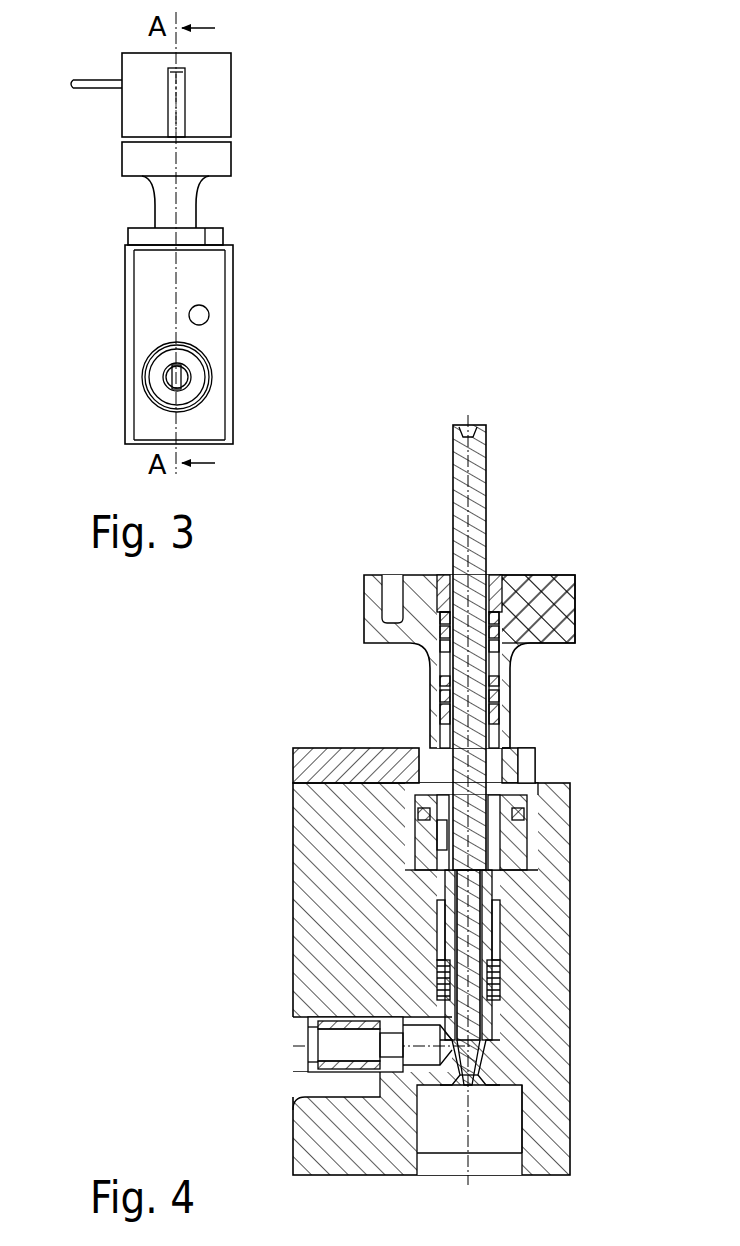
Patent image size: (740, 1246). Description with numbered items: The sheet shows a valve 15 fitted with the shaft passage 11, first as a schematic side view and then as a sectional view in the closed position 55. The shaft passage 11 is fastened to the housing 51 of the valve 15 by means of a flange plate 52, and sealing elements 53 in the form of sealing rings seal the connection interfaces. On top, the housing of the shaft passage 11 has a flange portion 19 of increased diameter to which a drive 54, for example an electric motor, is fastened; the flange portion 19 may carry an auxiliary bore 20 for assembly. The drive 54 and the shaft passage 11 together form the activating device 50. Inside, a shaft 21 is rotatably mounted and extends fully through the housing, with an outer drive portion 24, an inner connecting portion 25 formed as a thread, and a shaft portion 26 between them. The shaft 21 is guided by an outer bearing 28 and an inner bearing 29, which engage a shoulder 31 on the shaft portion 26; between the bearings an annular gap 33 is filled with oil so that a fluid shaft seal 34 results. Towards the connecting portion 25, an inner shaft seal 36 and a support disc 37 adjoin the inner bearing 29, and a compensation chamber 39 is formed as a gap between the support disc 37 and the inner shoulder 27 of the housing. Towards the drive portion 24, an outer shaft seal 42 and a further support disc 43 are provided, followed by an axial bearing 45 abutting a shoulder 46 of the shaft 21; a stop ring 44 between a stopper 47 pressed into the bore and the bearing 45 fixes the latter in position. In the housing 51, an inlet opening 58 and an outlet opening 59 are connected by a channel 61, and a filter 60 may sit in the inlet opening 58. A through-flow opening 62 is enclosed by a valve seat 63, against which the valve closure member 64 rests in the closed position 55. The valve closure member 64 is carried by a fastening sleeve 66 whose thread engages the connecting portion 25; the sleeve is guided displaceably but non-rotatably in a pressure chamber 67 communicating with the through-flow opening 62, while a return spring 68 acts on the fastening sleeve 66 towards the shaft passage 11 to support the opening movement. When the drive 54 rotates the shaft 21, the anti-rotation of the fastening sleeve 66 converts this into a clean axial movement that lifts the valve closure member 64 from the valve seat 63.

In FIG. 3, the shaft passage 11 is at (250, 125).
In FIG. 3, the valve 15 is at (259, 323).
In FIG. 3, the flange portion 19 is at (136, 162).
In FIG. 4, the auxiliary bore 20 is at (392, 595).
In FIG. 4, the shaft 21 is at (508, 500).
In FIG. 4, the drive portion 24 is at (460, 485).
In FIG. 4, the connecting portion 25 is at (480, 936).
In FIG. 4, the shaft portion 26 is at (456, 745).
In FIG. 4, the inner shoulder 27 is at (445, 880).
In FIG. 4, the outer bearing 28 is at (540, 802).
In FIG. 4, the inner bearing 29 is at (498, 706).
In FIG. 4, the shoulder 31 is at (492, 797).
In FIG. 4, the annular gap 33 is at (511, 749).
In FIG. 4, the fluid shaft seal 34 is at (514, 722).
In FIG. 4, the inner shaft seal 36 is at (437, 832).
In FIG. 4, the support disc 37 is at (420, 812).
In FIG. 4, the compensation chamber 39 is at (440, 662).
In FIG. 4, the outer shaft seal 42 is at (440, 696).
In FIG. 4, the further support disc 43 is at (440, 682).
In FIG. 4, the stop ring 44 is at (505, 616).
In FIG. 4, the axial bearing 45 is at (500, 641).
In FIG. 4, the shoulder 46 is at (505, 661).
In FIG. 4, the stopper 47 is at (435, 605).
In FIG. 3, the activating device 50 is at (262, 192).
In FIG. 3, the housing 51 is at (152, 298).
In FIG. 4, the housing 51 is at (320, 836).
In FIG. 3, the flange plate 52 is at (150, 237).
In FIG. 4, the flange plate 52 is at (330, 764).
In FIG. 4, the sealing elements 53 is at (522, 816).
In FIG. 3, the drive 54 is at (218, 53).
In FIG. 4, the closed position 55 is at (480, 1052).
In FIG. 4, the inlet opening 58 is at (300, 1080).
In FIG. 4, the outlet opening 59 is at (433, 1140).
In FIG. 4, the filter 60 is at (312, 1026).
In FIG. 4, the channel 61 is at (420, 1062).
In FIG. 4, the through-flow opening 62 is at (490, 1100).
In FIG. 4, the valve seat 63 is at (475, 1066).
In FIG. 4, the valve closure member 64 is at (455, 1070).
In FIG. 4, the fastening sleeve 66 is at (437, 975).
In FIG. 4, the pressure chamber 67 is at (440, 930).
In FIG. 4, the return spring 68 is at (500, 985).